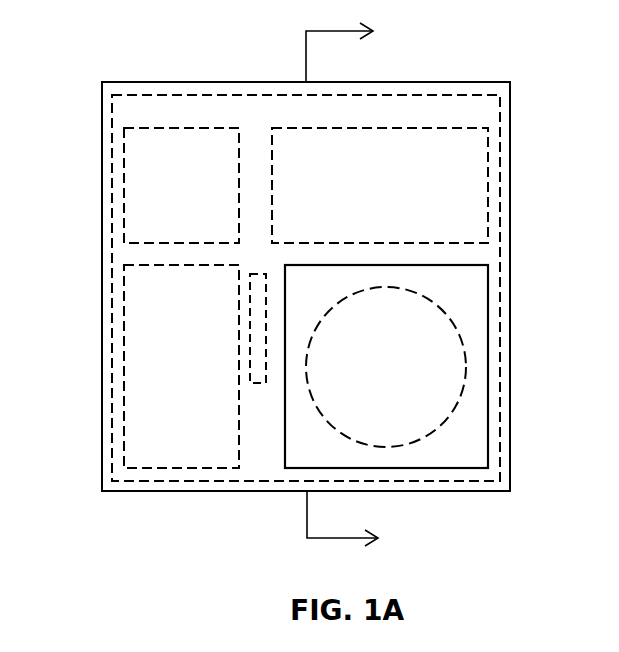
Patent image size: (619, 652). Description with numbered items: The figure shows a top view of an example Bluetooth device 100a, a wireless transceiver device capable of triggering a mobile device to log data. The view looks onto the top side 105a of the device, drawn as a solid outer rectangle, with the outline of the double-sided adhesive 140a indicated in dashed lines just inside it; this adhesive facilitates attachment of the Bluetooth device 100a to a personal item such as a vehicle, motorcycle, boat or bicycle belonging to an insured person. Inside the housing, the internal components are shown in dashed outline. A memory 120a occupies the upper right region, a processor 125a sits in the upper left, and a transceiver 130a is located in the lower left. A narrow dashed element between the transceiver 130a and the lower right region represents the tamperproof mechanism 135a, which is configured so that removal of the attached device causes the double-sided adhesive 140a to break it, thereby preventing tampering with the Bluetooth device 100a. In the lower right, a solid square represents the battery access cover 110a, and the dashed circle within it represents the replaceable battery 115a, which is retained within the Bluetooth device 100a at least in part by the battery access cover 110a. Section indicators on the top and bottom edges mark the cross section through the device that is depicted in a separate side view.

The Bluetooth device 100a is at (122, 60).
The top side 105a is at (511, 88).
The battery access cover 110a is at (462, 290).
The replaceable battery 115a is at (435, 390).
The memory 120a is at (462, 178).
The processor 125a is at (140, 190).
The transceiver 130a is at (140, 318).
The tamperproof mechanism 135a is at (258, 383).
The double-sided adhesive 140a is at (130, 103).